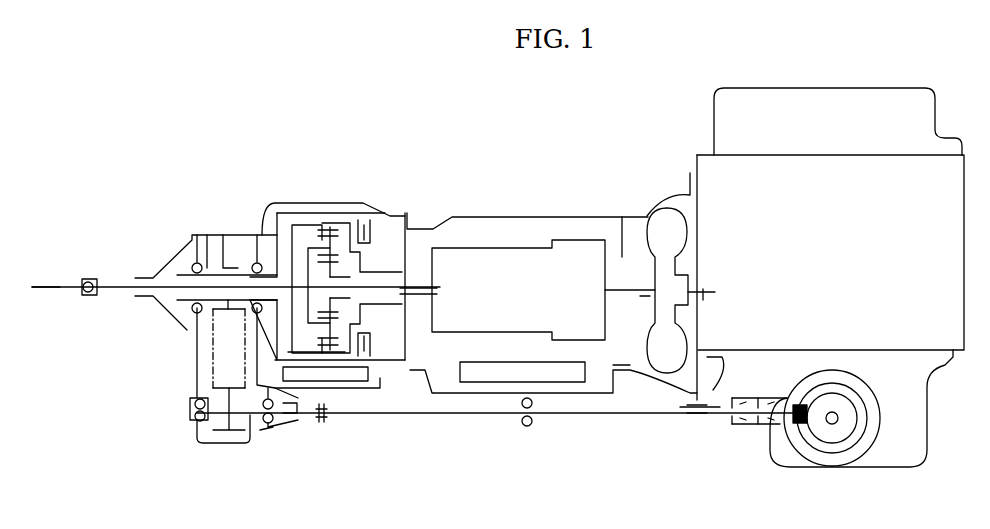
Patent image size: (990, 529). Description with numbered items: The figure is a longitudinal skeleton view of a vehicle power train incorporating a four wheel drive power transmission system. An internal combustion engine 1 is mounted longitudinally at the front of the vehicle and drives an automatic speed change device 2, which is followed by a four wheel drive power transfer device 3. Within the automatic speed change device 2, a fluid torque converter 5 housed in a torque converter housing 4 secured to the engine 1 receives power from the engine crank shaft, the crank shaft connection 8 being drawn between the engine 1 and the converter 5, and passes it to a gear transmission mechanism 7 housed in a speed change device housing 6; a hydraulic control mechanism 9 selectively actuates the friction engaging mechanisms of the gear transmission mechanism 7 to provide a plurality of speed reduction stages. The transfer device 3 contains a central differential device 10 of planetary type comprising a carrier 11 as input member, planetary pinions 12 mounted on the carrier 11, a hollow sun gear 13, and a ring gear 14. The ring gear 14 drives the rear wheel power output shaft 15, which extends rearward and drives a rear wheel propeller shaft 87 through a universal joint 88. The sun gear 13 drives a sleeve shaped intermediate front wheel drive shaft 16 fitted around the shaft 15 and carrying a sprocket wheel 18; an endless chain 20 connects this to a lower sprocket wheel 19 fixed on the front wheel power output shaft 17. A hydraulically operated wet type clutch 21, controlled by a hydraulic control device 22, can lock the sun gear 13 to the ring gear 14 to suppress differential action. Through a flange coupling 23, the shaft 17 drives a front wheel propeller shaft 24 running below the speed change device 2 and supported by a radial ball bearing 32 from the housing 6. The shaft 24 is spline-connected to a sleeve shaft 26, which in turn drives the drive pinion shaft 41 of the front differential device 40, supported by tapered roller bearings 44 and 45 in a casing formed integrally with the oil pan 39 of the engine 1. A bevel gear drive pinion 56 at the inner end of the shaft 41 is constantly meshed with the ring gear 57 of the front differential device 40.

The internal combustion engine 1 is at (818, 201).
The automatic speed change device 2 is at (515, 216).
The four wheel drive power transfer device 3 is at (313, 200).
The torque converter housing 4 is at (665, 202).
The fluid torque converter 5 is at (680, 245).
The speed change device housing 6 is at (560, 217).
The gear transmission mechanism 7 is at (468, 265).
The crankshaft 8 is at (703, 301).
The hydraulic control mechanism 9 is at (482, 375).
The central differential device 10 is at (332, 236).
The carrier 11 is at (277, 250).
The planetary pinions 12 is at (293, 240).
The sun gear 13 is at (333, 268).
The ring gear 14 is at (325, 235).
The rear wheel power output shaft 15 is at (108, 286).
The intermediate front wheel drive shaft 16 is at (210, 238).
The front wheel power output shaft 17 is at (245, 428).
The sprocket wheel 18 is at (222, 262).
The sprocket wheel 19 is at (218, 443).
The endless chain 20 is at (210, 368).
The wet type clutch 21 is at (373, 222).
The hydraulic control device 22 is at (348, 381).
The flange coupling 23 is at (322, 426).
The front wheel propeller shaft 24 is at (485, 416).
The sleeve shaft 26 is at (718, 392).
The radial ball bearing 32 is at (533, 420).
The oil pan 39 is at (928, 420).
The front differential device 40 is at (885, 404).
The drive pinion shaft 41 is at (758, 400).
The tapered roller bearing 44 is at (768, 432).
The tapered roller bearing 45 is at (742, 426).
The bevel gear drive pinion 56 is at (800, 406).
The ring gear 57 is at (850, 393).
The rear wheel propeller shaft 87 is at (55, 289).
The universal joint 88 is at (90, 296).